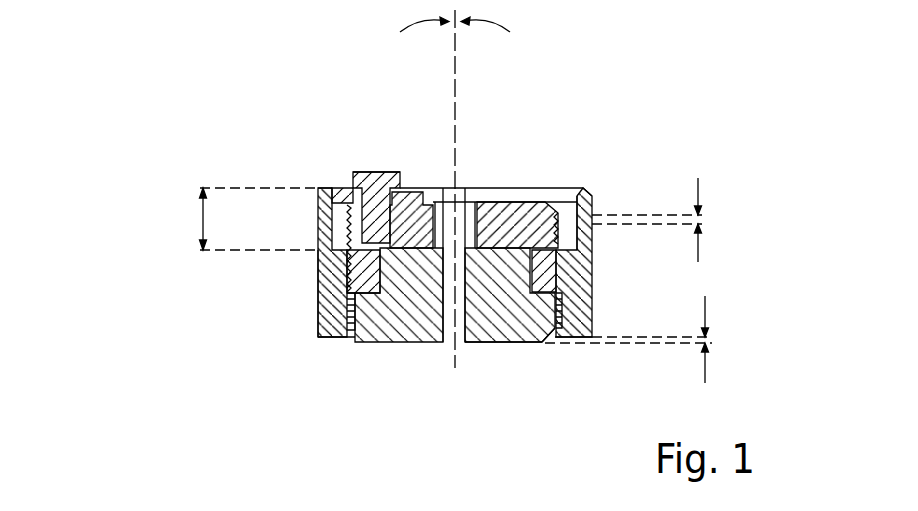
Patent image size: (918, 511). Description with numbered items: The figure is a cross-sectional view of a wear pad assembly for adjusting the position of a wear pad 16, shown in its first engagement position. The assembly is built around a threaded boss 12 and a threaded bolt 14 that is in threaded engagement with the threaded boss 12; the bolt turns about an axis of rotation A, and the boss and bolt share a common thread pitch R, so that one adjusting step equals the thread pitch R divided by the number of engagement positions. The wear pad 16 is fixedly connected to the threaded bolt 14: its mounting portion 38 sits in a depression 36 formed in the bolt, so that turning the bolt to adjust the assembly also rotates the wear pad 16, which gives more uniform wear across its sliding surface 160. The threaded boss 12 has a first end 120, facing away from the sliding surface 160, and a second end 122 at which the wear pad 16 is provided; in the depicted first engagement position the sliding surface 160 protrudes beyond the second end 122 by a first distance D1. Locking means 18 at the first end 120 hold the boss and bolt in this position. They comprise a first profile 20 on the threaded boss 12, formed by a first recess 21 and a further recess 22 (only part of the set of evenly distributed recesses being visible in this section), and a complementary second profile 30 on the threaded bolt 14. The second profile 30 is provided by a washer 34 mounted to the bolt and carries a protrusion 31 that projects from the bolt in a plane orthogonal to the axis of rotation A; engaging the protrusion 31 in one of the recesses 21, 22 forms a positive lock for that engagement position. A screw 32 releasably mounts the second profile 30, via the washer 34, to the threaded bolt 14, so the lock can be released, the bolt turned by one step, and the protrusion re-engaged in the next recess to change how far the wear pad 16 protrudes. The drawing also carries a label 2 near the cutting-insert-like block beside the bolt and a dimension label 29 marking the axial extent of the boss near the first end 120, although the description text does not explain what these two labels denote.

The cutting insert 2 is at (518, 216).
The threaded boss 12 is at (330, 287).
The threaded bolt 14 is at (578, 187).
The wear pad 16 is at (383, 341).
The locking means 18 is at (349, 160).
The first profile 20 is at (591, 203).
The first recess 21 is at (319, 188).
The further recess 22 is at (443, 187).
The axial extent 29 is at (200, 208).
The second profile 30 is at (303, 256).
The protrusion 31 is at (345, 215).
The screw 32 is at (377, 172).
The washer 34 is at (342, 203).
The depression 36 is at (548, 287).
The mounting portion 38 is at (533, 174).
The first end 120 is at (310, 201).
The second end 122 is at (310, 338).
The sliding surface 160 is at (498, 339).
The axis of rotation A is at (457, 84).
The thread pitch R is at (700, 220).
The first distance D1 is at (705, 344).